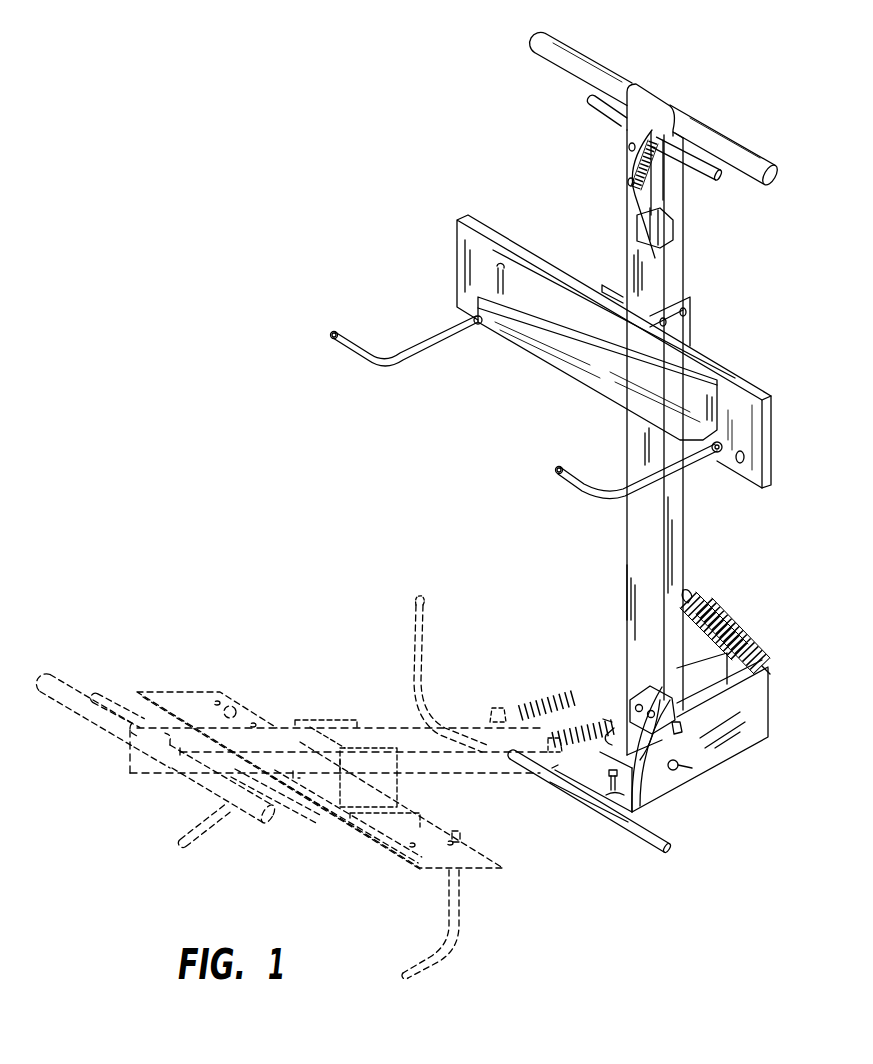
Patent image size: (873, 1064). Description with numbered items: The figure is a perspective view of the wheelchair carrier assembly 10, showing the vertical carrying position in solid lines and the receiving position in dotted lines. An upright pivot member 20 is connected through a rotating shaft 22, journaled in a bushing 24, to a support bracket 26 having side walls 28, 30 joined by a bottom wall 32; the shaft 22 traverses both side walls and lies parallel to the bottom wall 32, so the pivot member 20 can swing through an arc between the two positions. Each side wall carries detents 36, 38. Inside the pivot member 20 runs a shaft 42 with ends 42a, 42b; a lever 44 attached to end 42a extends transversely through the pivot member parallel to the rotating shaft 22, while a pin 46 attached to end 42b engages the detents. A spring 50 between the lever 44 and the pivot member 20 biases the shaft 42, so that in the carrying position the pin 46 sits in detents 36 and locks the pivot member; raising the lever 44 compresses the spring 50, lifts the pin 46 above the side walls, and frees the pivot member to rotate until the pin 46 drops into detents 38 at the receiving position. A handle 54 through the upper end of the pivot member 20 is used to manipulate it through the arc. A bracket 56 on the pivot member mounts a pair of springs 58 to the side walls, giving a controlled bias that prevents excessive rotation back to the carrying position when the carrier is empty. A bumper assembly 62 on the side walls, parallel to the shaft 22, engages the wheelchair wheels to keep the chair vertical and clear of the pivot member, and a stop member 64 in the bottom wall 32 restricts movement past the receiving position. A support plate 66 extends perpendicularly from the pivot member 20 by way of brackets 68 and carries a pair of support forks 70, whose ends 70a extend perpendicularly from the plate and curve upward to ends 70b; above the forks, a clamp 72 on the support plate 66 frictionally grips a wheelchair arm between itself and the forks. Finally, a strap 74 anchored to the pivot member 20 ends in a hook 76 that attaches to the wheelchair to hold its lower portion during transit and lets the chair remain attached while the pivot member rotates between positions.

The wheelchair carrier assembly 10 is at (413, 252).
The pivot member 20 is at (683, 270).
The rotating shaft 22 is at (678, 770).
The bushing 24 is at (690, 768).
The support bracket 26 is at (772, 690).
The side wall 28 is at (714, 684).
The side wall 30 is at (750, 714).
The bottom wall 32 is at (623, 795).
The detent 36 is at (683, 734).
The detent 38 is at (648, 768).
The shaft 42 is at (675, 234).
The end of shaft 42a is at (672, 198).
The end of shaft 42b is at (643, 702).
The lever 44 is at (607, 112).
The pin 46 is at (663, 700).
The spring 50 is at (632, 170).
The handle 54 is at (722, 152).
The bracket 56 is at (695, 590).
The springs 58 is at (712, 602).
The bumper assembly 62 is at (640, 855).
The stop member 64 is at (612, 790).
The support plate 66 is at (750, 400).
The brackets 68 is at (612, 288).
The support forks 70 is at (440, 358).
The end of support fork 70a is at (460, 318).
The end of support fork 70b is at (340, 330).
The clamp 72 is at (586, 334).
The strap 74 is at (412, 668).
The hook 76 is at (430, 600).